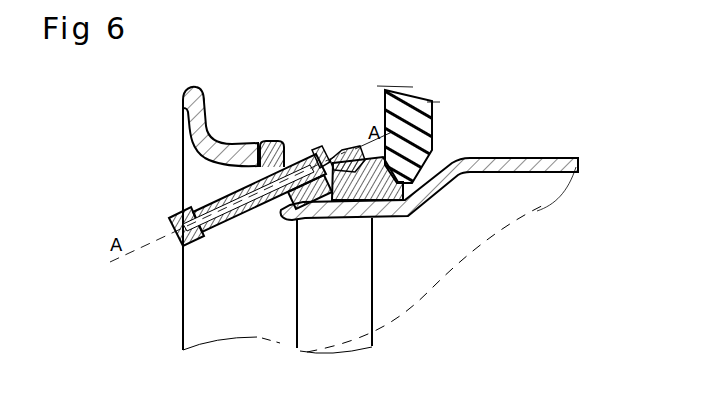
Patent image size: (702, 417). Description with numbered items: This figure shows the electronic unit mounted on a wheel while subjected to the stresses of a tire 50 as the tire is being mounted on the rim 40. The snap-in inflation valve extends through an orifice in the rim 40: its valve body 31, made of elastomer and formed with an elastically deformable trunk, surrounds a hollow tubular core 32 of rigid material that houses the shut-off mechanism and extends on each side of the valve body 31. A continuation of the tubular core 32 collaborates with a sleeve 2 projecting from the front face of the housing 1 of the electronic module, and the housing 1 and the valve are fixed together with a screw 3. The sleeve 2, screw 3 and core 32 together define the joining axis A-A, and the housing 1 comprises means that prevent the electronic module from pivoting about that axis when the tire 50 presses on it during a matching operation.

The housing 1 is at (372, 180).
The sleeve 2 is at (322, 162).
The screw 3 is at (353, 168).
The valve body 31 is at (222, 227).
The hollow tubular core 32 is at (265, 150).
The rim 40 is at (191, 104).
The tire 50 is at (432, 132).